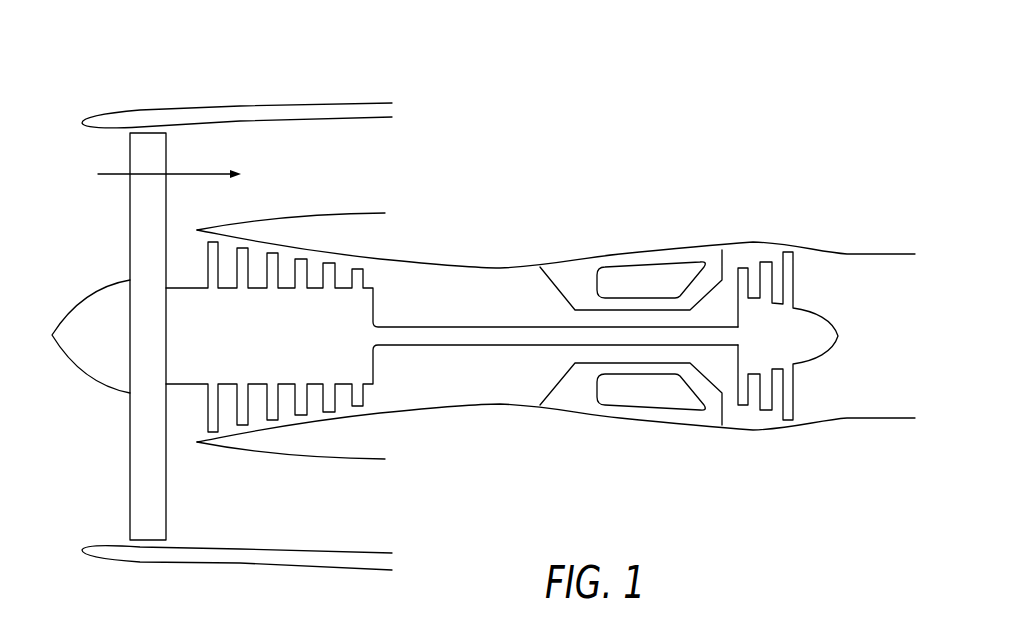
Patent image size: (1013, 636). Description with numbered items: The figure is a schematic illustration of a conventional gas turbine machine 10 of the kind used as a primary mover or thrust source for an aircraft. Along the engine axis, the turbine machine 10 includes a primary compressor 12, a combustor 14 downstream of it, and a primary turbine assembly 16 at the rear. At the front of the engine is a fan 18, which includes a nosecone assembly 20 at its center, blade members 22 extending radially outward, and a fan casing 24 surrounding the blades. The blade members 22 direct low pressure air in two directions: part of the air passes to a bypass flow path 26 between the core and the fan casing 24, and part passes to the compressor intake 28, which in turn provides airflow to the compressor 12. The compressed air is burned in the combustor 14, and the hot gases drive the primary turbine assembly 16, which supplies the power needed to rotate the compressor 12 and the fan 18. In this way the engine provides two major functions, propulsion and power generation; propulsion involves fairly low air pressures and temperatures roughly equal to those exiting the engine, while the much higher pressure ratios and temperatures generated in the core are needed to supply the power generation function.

The gas turbine machine 10 is at (649, 141).
The primary compressor 12 is at (307, 323).
The combustor 14 is at (640, 282).
The primary turbine assembly 16 is at (780, 335).
The fan 18 is at (68, 204).
The nosecone assembly 20 is at (90, 365).
The blade members 22 is at (150, 522).
The fan casing 24 is at (243, 112).
The bypass flow path 26 is at (203, 170).
The compressor intake 28 is at (200, 267).